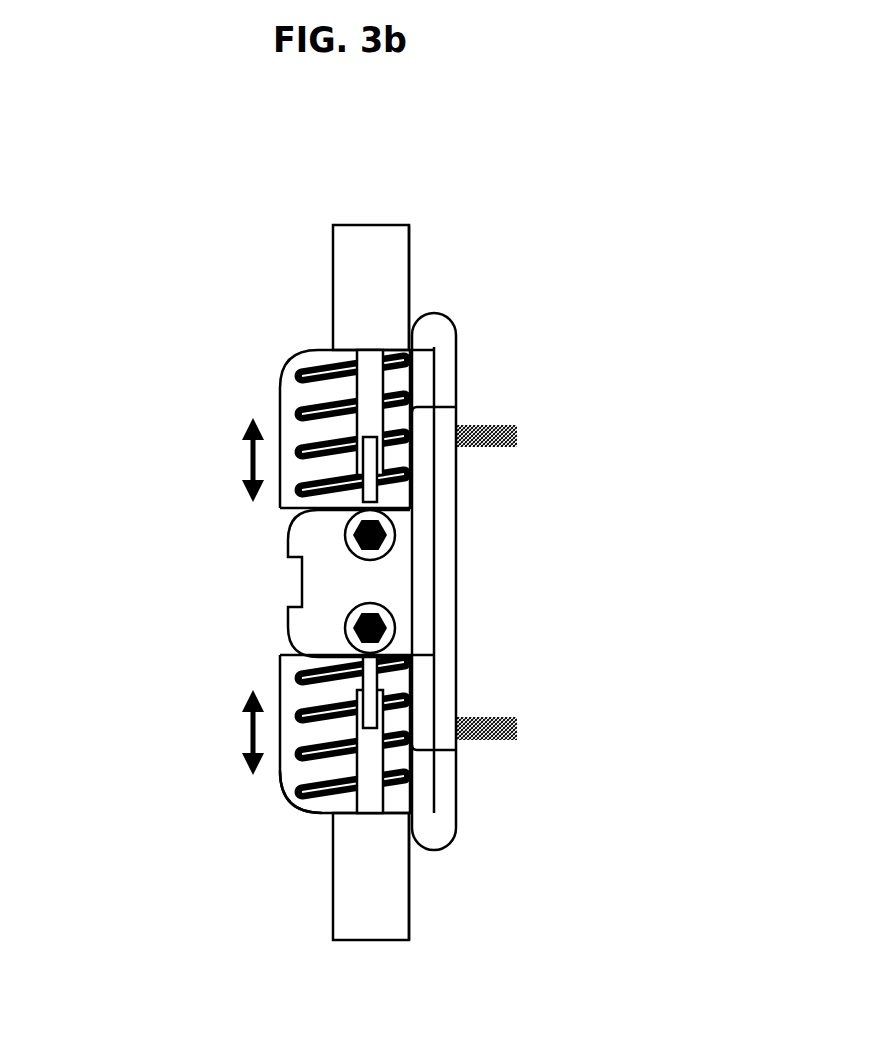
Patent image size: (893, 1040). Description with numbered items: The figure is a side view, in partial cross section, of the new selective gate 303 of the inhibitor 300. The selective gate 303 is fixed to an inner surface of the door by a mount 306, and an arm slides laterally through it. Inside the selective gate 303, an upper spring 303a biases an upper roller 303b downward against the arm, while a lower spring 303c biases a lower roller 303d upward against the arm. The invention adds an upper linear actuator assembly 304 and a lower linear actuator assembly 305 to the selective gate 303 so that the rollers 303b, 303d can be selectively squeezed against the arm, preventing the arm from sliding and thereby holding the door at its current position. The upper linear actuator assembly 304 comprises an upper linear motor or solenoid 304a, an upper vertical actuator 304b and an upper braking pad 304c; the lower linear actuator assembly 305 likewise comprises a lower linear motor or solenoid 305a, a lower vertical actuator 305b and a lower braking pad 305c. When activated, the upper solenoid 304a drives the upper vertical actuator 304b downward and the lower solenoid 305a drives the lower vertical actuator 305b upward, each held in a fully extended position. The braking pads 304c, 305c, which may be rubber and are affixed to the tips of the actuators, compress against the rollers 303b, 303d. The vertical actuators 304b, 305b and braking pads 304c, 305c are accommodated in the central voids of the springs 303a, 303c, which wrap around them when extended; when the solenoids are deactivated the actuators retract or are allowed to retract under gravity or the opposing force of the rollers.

The inhibitor 300 is at (690, 148).
The selective gate 303 is at (264, 406).
The upper spring 303a is at (325, 353).
The upper roller 303b is at (352, 543).
The lower spring 303c is at (318, 800).
The lower roller 303d is at (352, 632).
The upper linear actuator assembly 304 is at (312, 257).
The upper linear motor or solenoid 304a is at (410, 257).
The upper vertical actuator 304b is at (370, 372).
The upper braking pad 304c is at (370, 450).
The lower linear actuator assembly 305 is at (312, 903).
The lower linear motor or solenoid 305a is at (410, 903).
The lower vertical actuator 305b is at (370, 757).
The lower braking pad 305c is at (370, 718).
The mount 306 is at (472, 623).